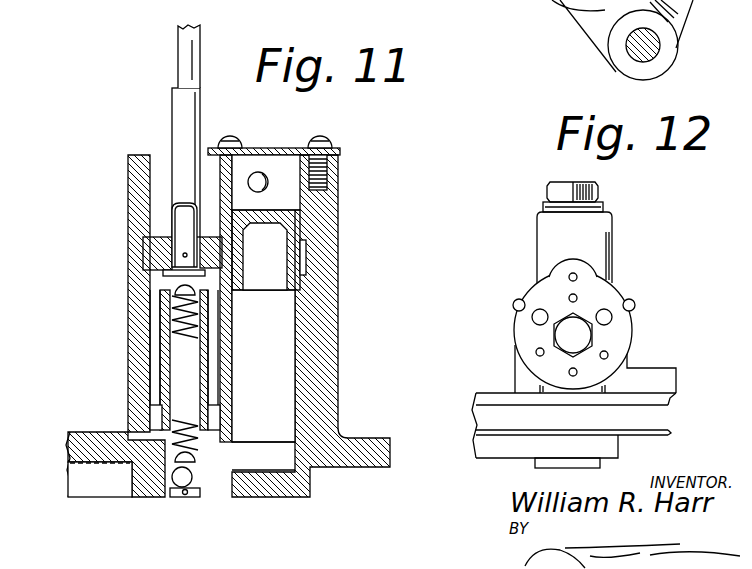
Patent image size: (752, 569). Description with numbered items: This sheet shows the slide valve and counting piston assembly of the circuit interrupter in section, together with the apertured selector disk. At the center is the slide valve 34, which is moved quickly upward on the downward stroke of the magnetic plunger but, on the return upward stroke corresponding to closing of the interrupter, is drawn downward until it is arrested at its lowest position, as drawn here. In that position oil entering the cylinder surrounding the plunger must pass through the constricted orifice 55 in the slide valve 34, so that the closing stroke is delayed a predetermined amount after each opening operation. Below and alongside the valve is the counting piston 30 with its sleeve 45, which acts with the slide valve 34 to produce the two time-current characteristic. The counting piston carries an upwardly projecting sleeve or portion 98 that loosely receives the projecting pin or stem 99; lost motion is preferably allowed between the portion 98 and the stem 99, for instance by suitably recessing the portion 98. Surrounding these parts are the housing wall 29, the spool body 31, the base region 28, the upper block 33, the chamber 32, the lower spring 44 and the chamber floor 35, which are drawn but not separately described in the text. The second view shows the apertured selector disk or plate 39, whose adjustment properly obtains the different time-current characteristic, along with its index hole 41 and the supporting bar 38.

In FIG. 11, the pin 99 is at (178, 38).
In FIG. 11, the sleeve or portion of the counting piston 98 is at (172, 106).
In FIG. 11, the housing wall 29 is at (128, 190).
In FIG. 11, the valve spool 31 is at (213, 258).
In FIG. 11, the counting piston 30 is at (128, 432).
In FIG. 11, the mounting flange 28 is at (90, 456).
In FIG. 11, the constricted orifice 55 is at (265, 210).
In FIG. 11, the upper block 33 is at (290, 200).
In FIG. 11, the slide valve 34 is at (305, 258).
In FIG. 11, the chamber 32 is at (285, 325).
In FIG. 11, the sleeve 45 is at (220, 322).
In FIG. 11, the lower spring 44 is at (190, 338).
In FIG. 11, the chamber floor 35 is at (272, 445).
In FIG. 12, the index hole 41 is at (578, 298).
In FIG. 12, the apertured selector disk or plate 39 is at (523, 322).
In FIG. 12, the base bar 38 is at (573, 372).